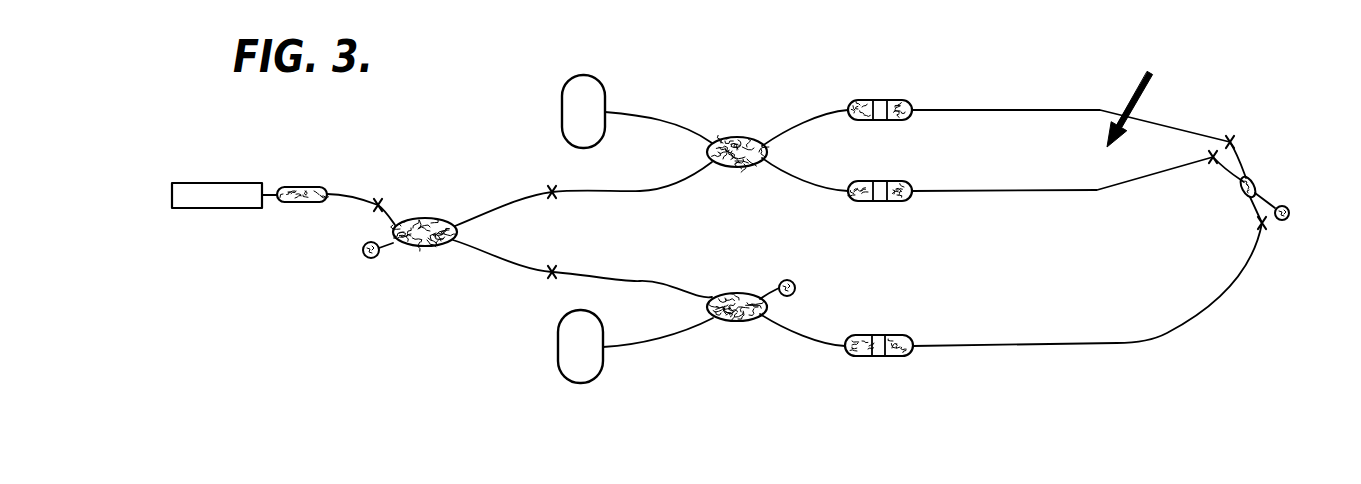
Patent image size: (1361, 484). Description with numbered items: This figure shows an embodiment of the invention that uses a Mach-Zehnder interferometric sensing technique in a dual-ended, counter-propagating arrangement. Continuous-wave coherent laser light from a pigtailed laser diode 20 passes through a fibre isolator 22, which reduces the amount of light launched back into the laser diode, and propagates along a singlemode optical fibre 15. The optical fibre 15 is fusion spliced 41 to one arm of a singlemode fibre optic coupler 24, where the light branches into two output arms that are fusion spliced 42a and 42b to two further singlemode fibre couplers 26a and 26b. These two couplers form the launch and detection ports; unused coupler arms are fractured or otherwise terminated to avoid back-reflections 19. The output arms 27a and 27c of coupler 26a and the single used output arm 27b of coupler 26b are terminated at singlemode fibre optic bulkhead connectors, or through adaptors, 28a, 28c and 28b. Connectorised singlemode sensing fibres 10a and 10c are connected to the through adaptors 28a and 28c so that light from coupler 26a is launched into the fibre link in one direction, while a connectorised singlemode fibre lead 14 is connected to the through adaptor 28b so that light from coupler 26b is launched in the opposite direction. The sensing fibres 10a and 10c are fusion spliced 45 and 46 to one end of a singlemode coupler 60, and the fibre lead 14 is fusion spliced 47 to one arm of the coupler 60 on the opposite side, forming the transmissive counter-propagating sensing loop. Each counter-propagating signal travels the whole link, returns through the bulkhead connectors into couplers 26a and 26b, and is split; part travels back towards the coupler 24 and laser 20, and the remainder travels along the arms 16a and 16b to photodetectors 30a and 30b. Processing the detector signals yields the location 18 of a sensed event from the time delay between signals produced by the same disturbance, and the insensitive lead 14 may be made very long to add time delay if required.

The pigtailed laser diode 20 is at (210, 197).
The fibre isolator 22 is at (303, 187).
The singlemode optical fibre 15 is at (352, 193).
The fusion splice 41 is at (387, 201).
The singlemode fibre optic coupler 24 is at (423, 220).
The terminated arm 19 is at (363, 252).
The fusion splice 42a is at (563, 195).
The fusion splice 42b is at (557, 267).
The photodetector 30a is at (592, 75).
The arm 16a is at (667, 117).
The singlemode fibre coupler 26a is at (737, 137).
The output arm 27a is at (797, 118).
The singlemode fibre optic bulkhead connector 28a is at (870, 102).
The connectorised singlemode sensing fibre 10a is at (993, 108).
The location of the sensed event 18 is at (1137, 83).
The fusion splice 45 is at (1232, 138).
The singlemode coupler 60 is at (1252, 182).
The fusion splice 46 is at (1210, 165).
The fusion splice 47 is at (1257, 225).
The output arm 27c is at (797, 190).
The singlemode fibre optic bulkhead connector 28c is at (896, 202).
The connectorised singlemode sensing fibre 10c is at (1038, 191).
The photodetector 30b is at (560, 367).
The arm 16b is at (632, 348).
The singlemode fibre coupler 26b is at (730, 325).
The output arm 27b is at (817, 342).
The singlemode fibre optic bulkhead connector 28b is at (877, 357).
The connectorised singlemode fibre lead 14 is at (1053, 343).